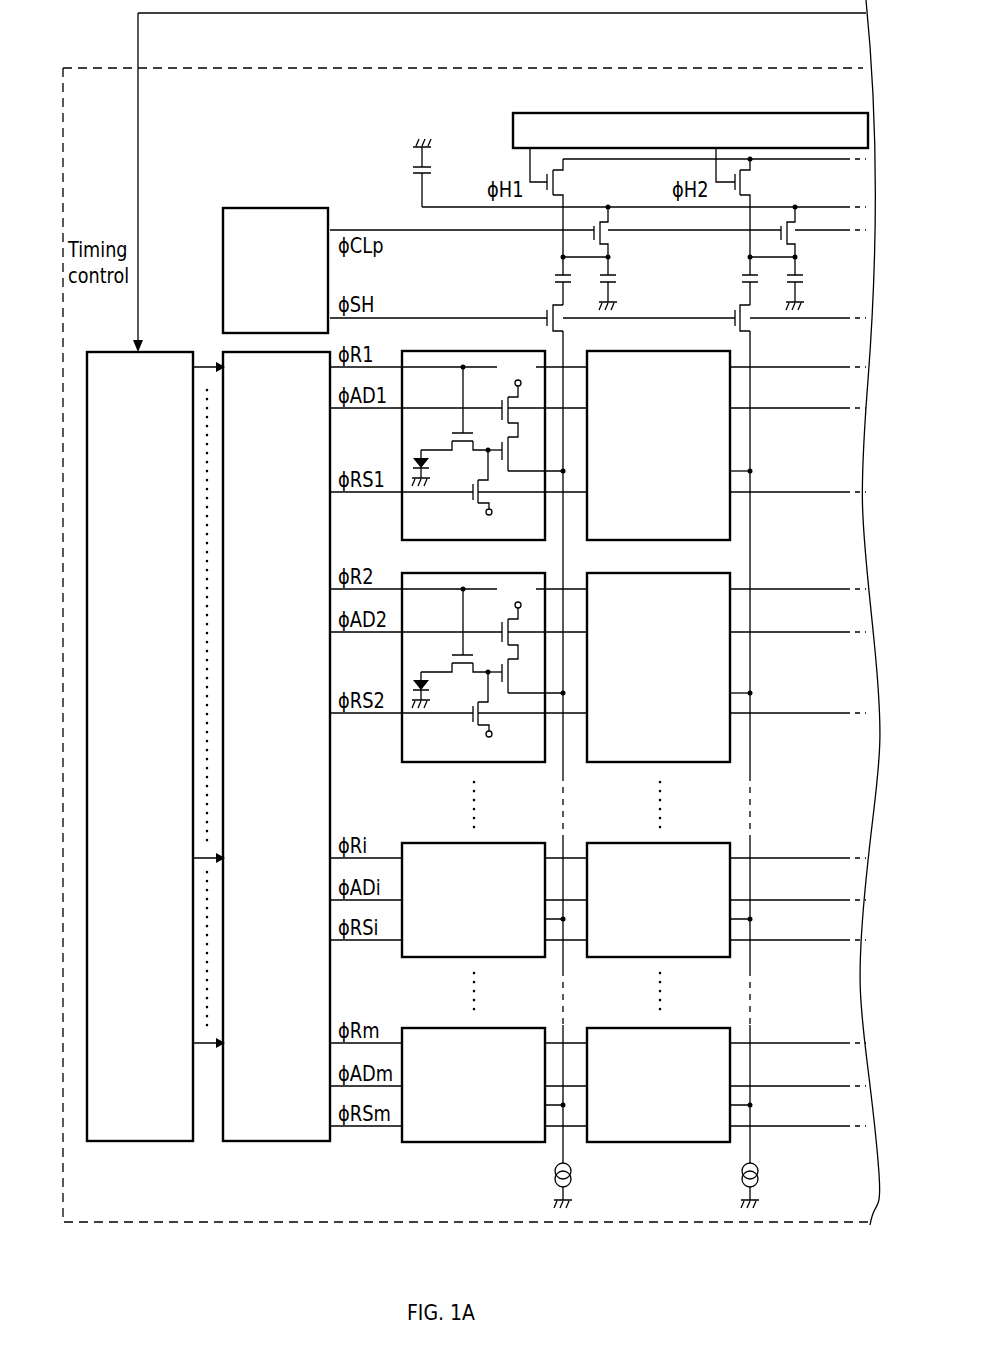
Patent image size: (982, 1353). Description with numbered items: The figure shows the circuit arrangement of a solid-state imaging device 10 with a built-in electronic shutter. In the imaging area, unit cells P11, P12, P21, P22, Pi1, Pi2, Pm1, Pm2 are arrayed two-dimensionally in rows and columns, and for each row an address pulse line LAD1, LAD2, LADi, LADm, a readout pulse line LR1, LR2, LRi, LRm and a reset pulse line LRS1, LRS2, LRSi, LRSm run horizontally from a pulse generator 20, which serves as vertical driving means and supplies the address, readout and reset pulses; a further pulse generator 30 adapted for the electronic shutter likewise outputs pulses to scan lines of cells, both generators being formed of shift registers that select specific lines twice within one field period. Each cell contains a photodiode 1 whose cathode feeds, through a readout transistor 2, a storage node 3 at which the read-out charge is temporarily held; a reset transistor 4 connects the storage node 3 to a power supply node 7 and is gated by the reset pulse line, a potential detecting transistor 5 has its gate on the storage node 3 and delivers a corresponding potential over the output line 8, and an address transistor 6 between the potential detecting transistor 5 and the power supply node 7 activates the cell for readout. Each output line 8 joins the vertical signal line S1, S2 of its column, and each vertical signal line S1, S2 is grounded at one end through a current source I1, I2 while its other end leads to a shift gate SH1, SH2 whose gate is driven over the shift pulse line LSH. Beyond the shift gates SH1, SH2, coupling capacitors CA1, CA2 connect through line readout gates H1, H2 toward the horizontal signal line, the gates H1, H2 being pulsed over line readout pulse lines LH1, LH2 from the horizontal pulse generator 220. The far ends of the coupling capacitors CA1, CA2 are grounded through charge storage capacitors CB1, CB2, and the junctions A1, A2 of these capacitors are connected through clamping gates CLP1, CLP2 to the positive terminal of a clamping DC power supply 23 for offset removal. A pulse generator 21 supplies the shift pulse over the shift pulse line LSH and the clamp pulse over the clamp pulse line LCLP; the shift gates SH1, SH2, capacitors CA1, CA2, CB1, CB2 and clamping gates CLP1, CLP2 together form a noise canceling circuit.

The solid-state imaging device 10 is at (454, 68).
The pulse generator 20 is at (277, 1141).
The pulse generator 21 is at (274, 208).
The clamping DC power supply 23 is at (409, 164).
The pulse generator 30 is at (140, 1141).
The horizontal pulse generator 220 is at (793, 113).
The photodiode 1 is at (432, 463).
The readout transistor 2 is at (448, 436).
The storage node 3 is at (488, 448).
The reset transistor 4 is at (470, 493).
The potential detecting transistor 5 is at (512, 446).
The address transistor 6 is at (512, 411).
The power supply node 7 is at (512, 386).
The output line 8 is at (518, 472).
The line readout gate H1 is at (570, 217).
The line readout gate H2 is at (747, 211).
The line readout pulse line LH1 is at (526, 163).
The line readout pulse line LH2 is at (714, 169).
The clamp pulse line LCLP is at (343, 230).
The shift pulse line LSH is at (409, 318).
The clamping gate CLP1 is at (608, 232).
The clamping gate CLP2 is at (794, 219).
The coupling capacitor CA1 is at (544, 284).
The coupling capacitor CA2 is at (728, 287).
The charge storage capacitor CB1 is at (627, 289).
The charge storage capacitor CB2 is at (814, 289).
The junction A1 is at (613, 258).
The junction A2 is at (799, 258).
The shift gate SH1 is at (545, 311).
The shift gate SH2 is at (755, 327).
The vertical signal line S1 is at (561, 1148).
The vertical signal line S2 is at (748, 1148).
The current source I1 is at (578, 1176).
The current source I2 is at (765, 1176).
The unit cell P11 is at (485, 351).
The unit cell P12 is at (670, 351).
The unit cell P21 is at (485, 573).
The unit cell P22 is at (670, 573).
The unit cell Pi1 is at (500, 843).
The unit cell Pi2 is at (685, 843).
The unit cell Pm1 is at (500, 1028).
The unit cell Pm2 is at (685, 1028).
The readout pulse line LR1 is at (765, 367).
The readout pulse line LR2 is at (765, 589).
The readout pulse line LRi is at (765, 858).
The readout pulse line LRm is at (765, 1043).
The address pulse line LAD1 is at (765, 408).
The address pulse line LAD2 is at (765, 632).
The address pulse line LADi is at (765, 900).
The address pulse line LADm is at (765, 1086).
The reset pulse line LRS1 is at (765, 492).
The reset pulse line LRS2 is at (765, 713).
The reset pulse line LRSi is at (765, 940).
The reset pulse line LRSm is at (765, 1126).